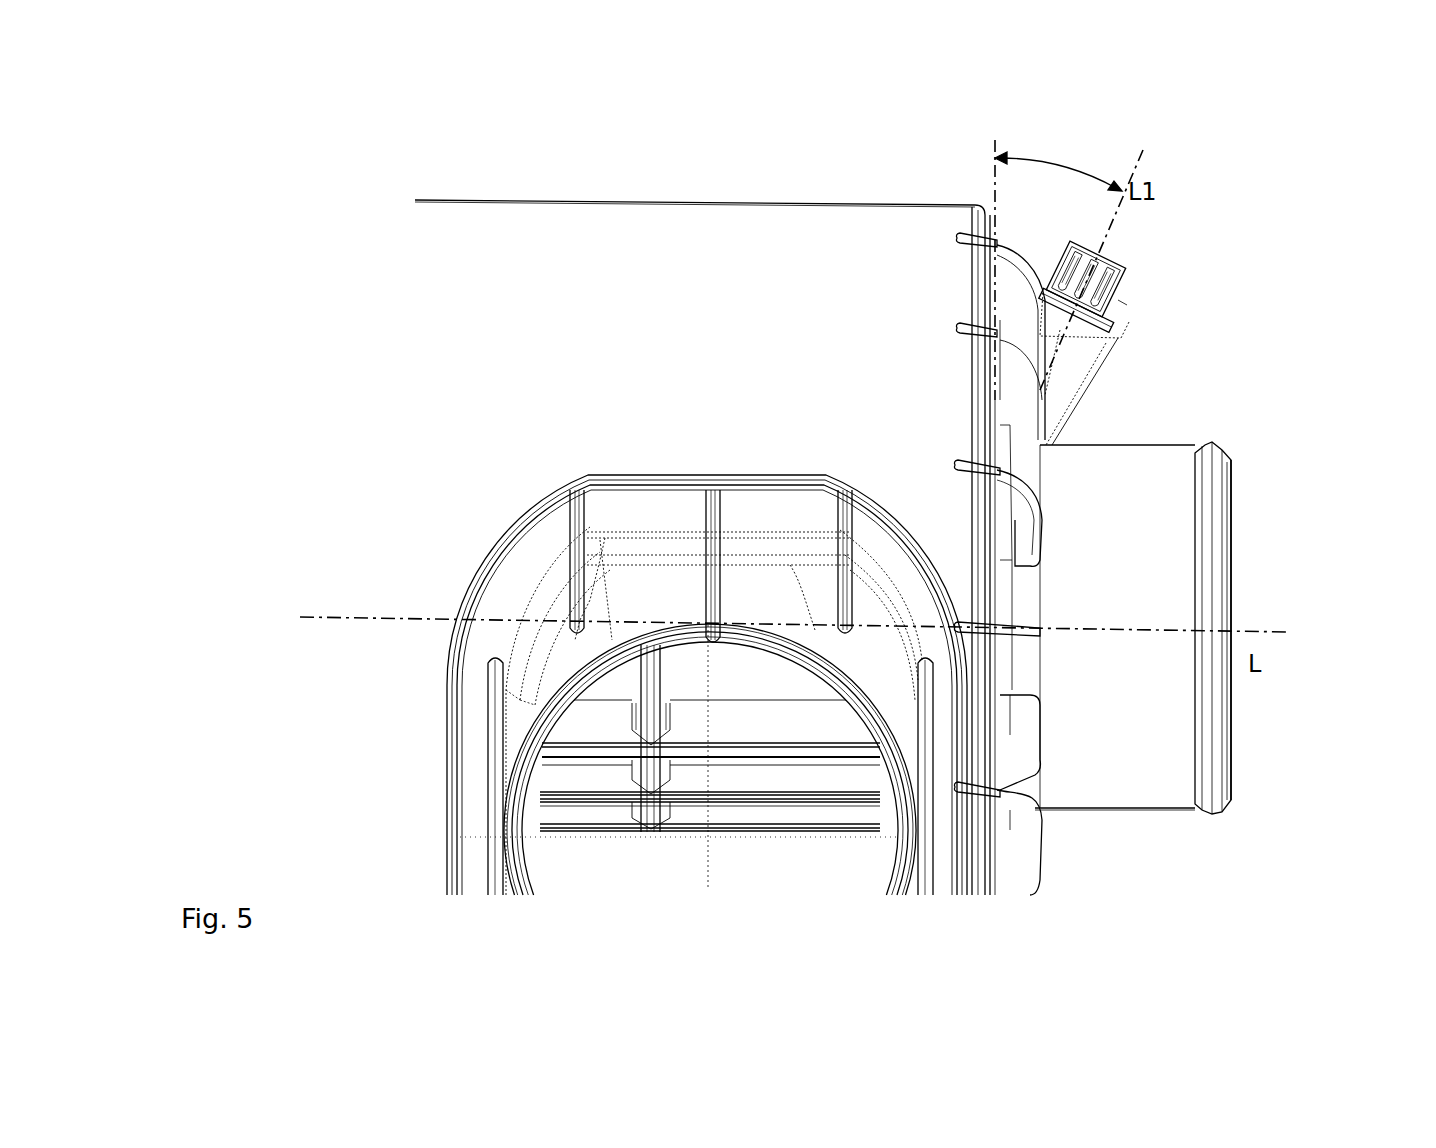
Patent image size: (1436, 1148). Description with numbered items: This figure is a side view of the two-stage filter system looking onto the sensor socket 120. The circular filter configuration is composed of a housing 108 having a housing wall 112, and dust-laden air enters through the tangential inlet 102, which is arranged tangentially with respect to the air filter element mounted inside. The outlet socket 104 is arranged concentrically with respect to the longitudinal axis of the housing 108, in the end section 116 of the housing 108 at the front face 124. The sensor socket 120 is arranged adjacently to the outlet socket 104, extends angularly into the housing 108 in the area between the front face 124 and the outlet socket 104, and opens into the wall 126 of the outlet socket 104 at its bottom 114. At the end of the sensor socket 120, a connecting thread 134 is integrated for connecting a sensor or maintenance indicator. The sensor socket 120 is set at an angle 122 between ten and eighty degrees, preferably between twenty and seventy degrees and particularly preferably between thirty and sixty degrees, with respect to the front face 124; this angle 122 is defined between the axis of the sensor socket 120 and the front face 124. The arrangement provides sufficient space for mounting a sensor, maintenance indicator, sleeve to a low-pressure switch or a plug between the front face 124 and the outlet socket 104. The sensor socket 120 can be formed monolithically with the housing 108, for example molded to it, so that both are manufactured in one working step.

The tangential inlet 102 is at (527, 737).
The outlet socket 104 is at (1232, 608).
The housing 108 is at (725, 203).
The housing wall 112 is at (860, 205).
The bottom 114 is at (1040, 446).
The end section 116 is at (1104, 383).
The sensor socket 120 is at (1128, 245).
The angle 122 is at (1085, 165).
The front face 124 is at (990, 316).
The wall of the outlet socket 126 is at (1145, 827).
The connecting thread 134 is at (1130, 296).